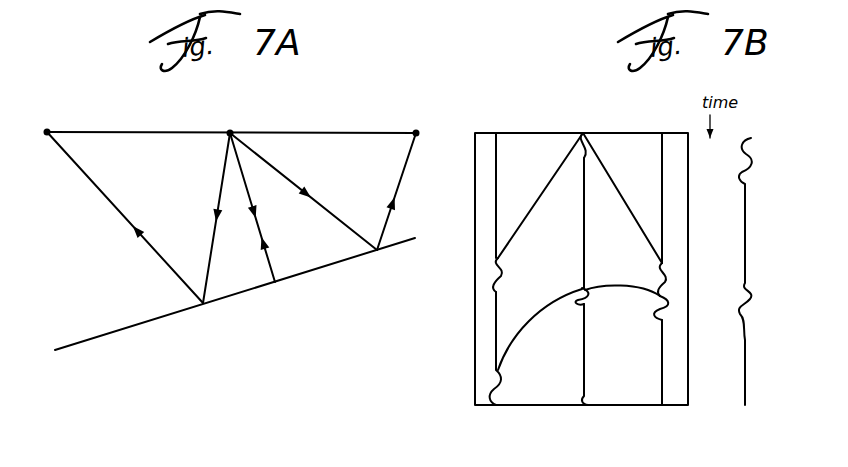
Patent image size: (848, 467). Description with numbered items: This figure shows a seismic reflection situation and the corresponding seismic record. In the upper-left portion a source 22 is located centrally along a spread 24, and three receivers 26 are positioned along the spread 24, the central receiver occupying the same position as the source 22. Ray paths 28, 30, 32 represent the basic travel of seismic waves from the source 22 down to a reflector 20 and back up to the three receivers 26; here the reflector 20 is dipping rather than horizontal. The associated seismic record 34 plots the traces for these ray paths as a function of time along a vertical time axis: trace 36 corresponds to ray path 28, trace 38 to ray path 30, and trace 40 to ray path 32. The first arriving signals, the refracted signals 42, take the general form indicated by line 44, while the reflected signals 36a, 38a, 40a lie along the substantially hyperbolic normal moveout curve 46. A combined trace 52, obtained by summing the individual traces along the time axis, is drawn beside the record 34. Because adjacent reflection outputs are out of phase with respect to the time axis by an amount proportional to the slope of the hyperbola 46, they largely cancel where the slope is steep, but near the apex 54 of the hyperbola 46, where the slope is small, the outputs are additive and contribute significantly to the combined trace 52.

In FIG. 7A, the reflector 20 is at (134, 326).
In FIG. 7A, the source 22 is at (234, 130).
In FIG. 7A, the spread 24 is at (327, 119).
In FIG. 7A, the receivers 26 is at (46, 128).
In FIG. 7A, the ray path 28 is at (117, 210).
In FIG. 7A, the ray path 30 is at (270, 262).
In FIG. 7A, the ray path 32 is at (288, 178).
In FIG. 7B, the seismic record 34 is at (581, 129).
In FIG. 7B, the trace 36 is at (496, 329).
In FIG. 7B, the reflected signal 36a is at (488, 388).
In FIG. 7B, the trace 38 is at (585, 407).
In FIG. 7B, the reflected signal 38a is at (587, 286).
In FIG. 7B, the trace 40 is at (666, 385).
In FIG. 7B, the reflected signal 40a is at (666, 312).
In FIG. 7B, the refracted signals 42 is at (590, 135).
In FIG. 7B, the line 44 is at (540, 194).
In FIG. 7B, the normal moveout curve 46 is at (540, 320).
In FIG. 7B, the combined trace 52 is at (748, 224).
In FIG. 7B, the apex 54 is at (614, 284).